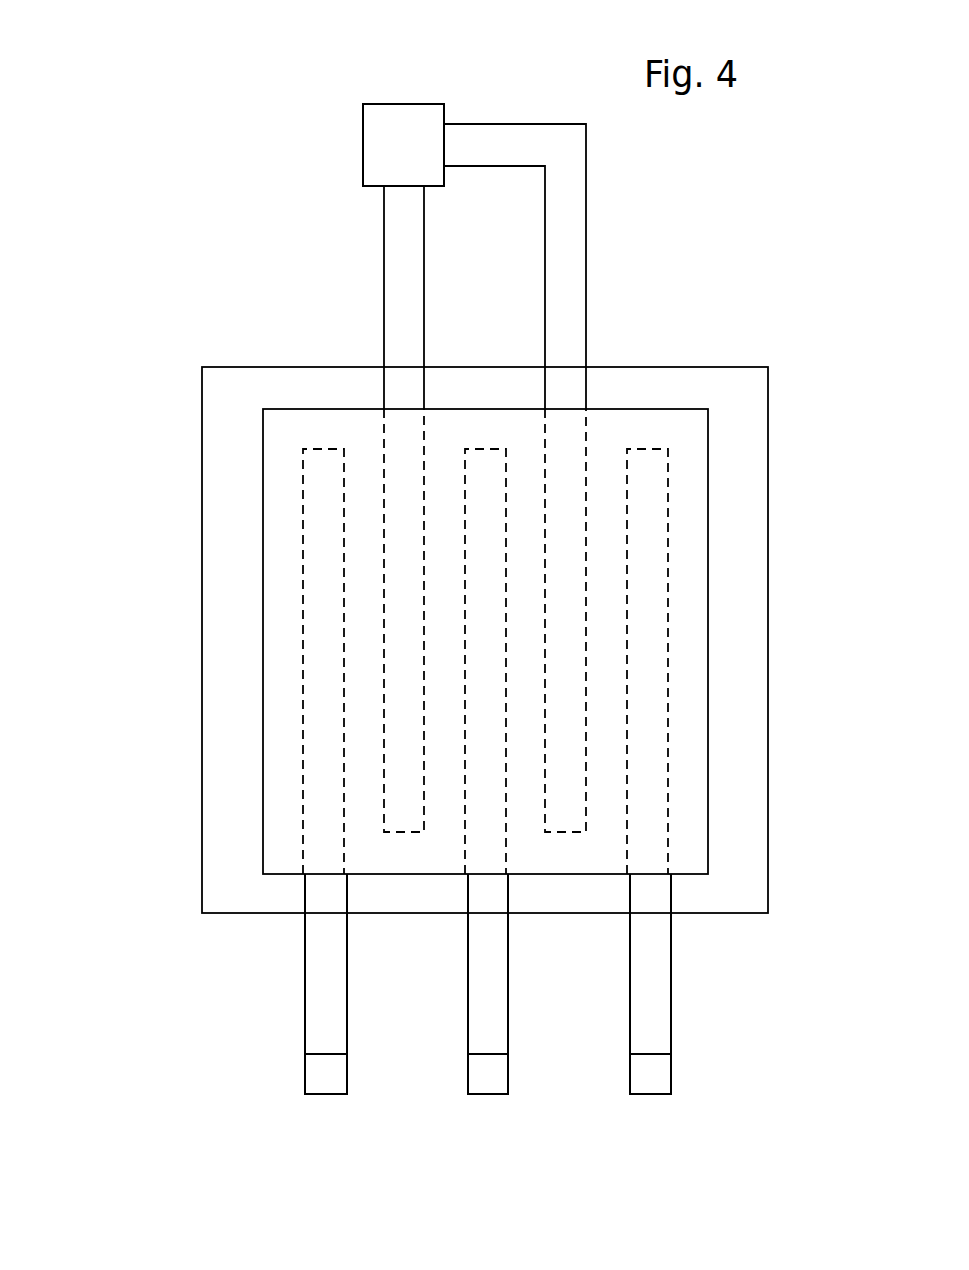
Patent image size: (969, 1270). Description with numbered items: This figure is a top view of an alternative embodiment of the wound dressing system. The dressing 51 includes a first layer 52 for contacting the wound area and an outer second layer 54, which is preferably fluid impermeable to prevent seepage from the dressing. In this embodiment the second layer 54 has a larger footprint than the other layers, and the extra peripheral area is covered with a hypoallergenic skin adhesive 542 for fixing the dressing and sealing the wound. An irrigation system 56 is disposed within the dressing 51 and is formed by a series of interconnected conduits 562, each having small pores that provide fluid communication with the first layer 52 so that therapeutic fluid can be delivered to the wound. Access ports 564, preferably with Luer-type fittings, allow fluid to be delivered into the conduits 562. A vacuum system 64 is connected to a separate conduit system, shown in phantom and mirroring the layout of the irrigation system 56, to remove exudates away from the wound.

The dressing 51 is at (762, 629).
The first layer 52 is at (283, 649).
The second layer 54 is at (202, 472).
The skin adhesive 542 is at (223, 810).
The irrigation system 56 is at (607, 428).
The conduits 562 is at (669, 833).
The access port 564 is at (671, 1075).
The vacuum system 64 is at (423, 103).